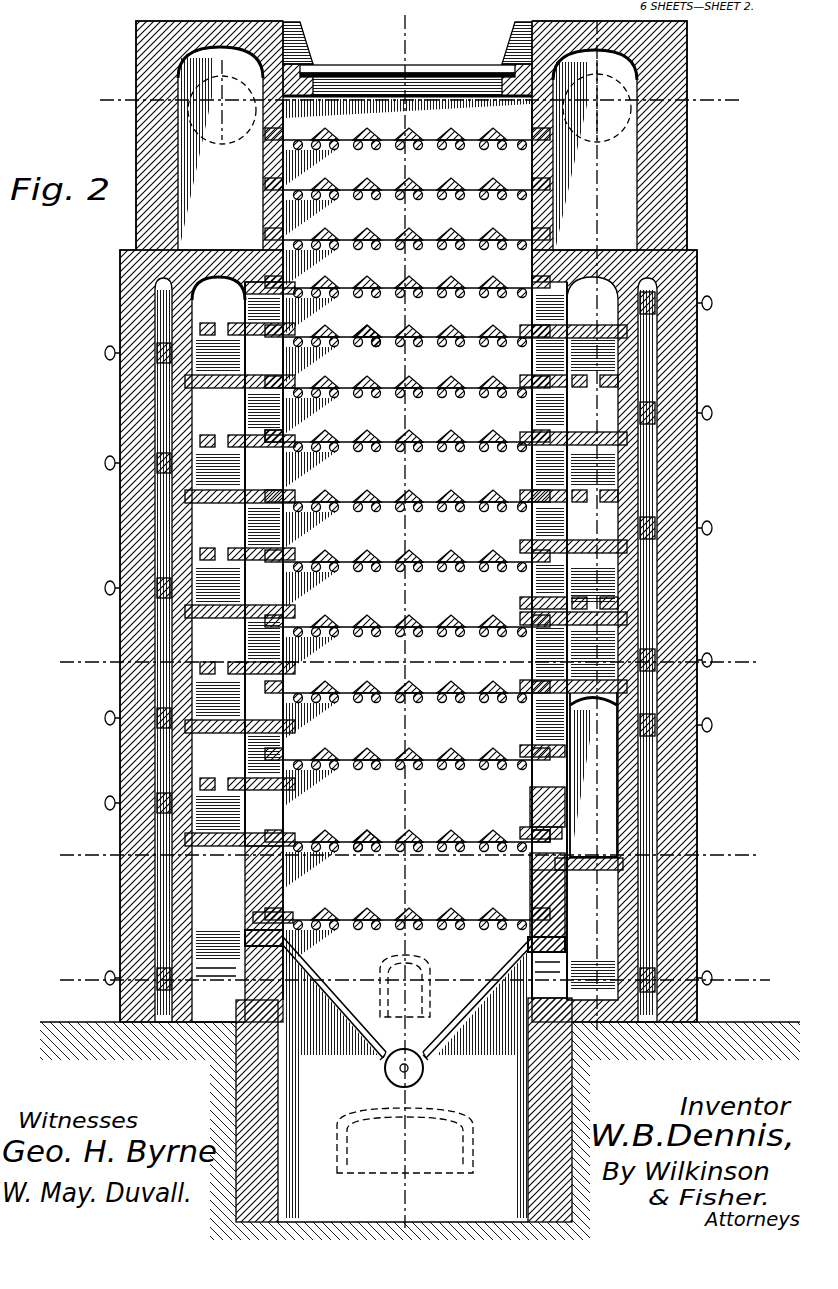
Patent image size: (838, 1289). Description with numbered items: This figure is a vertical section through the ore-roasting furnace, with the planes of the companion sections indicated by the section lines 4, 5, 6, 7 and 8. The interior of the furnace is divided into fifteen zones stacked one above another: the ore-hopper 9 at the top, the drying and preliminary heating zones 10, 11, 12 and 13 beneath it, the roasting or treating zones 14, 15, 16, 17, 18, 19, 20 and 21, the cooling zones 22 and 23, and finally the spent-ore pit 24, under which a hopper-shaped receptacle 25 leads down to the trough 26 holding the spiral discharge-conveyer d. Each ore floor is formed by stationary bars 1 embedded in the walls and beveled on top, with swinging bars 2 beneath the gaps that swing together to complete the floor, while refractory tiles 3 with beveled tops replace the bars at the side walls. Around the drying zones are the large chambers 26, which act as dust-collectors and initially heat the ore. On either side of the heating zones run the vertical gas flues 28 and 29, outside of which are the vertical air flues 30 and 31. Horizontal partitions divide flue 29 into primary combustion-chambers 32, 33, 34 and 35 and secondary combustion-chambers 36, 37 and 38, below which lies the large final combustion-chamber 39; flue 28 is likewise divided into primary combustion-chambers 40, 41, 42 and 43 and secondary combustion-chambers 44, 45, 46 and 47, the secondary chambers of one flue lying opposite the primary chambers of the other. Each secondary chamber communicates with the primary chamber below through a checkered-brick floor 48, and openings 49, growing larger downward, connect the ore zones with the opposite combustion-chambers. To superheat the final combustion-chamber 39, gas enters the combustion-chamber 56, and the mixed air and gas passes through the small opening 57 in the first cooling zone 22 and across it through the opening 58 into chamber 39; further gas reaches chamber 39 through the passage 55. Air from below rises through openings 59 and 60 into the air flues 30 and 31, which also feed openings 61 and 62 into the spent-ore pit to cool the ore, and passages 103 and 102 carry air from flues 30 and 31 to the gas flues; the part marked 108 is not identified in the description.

The stationary bars 1 is at (372, 338).
The swinging bars 2 is at (378, 345).
The refractory tiles 3 is at (292, 438).
The section line 4 4 is at (622, 16).
The section line 5 5 is at (739, 647).
The section line 6 6 is at (739, 840).
The section line 7 7 is at (739, 964).
The section line 8 8 is at (716, 82).
The ore-hopper 9 is at (407, 70).
The drying and preliminary heating zone 10 is at (496, 122).
The drying and preliminary heating zone 11 is at (492, 174).
The drying and preliminary heating zone 12 is at (496, 224).
The drying and preliminary heating zone 13 is at (496, 274).
The roasting or treating zone 14 is at (496, 322).
The roasting or treating zone 15 is at (496, 370).
The roasting or treating zone 16 is at (496, 422).
The roasting or treating zone 17 is at (496, 482).
The roasting or treating zone 18 is at (496, 542).
The roasting or treating zone 19 is at (496, 602).
The roasting or treating zone 20 is at (496, 667).
The final heating zone 21 is at (496, 729).
The cooling zone 22 is at (496, 812).
The cooling zone 23 is at (496, 894).
The spent-ore pit 24 is at (496, 962).
The hopper-shaped receptacle 25 is at (405, 1064).
The trough and large dust-collecting chambers 26 is at (407, 148).
The vertical gas channel or flue 28 is at (249, 907).
The vertical gas channel or flue 29 is at (589, 892).
The vertical air channel or flue 30 is at (205, 878).
The vertical air channel or flue 31 is at (692, 905).
The primary combustion-chamber 32 is at (690, 272).
The primary combustion-chamber 33 is at (610, 410).
The primary combustion-chamber 34 is at (610, 513).
The primary combustion-chamber 35 is at (610, 635).
The secondary combustion-chamber 36 is at (600, 360).
The secondary combustion-chamber 37 is at (608, 475).
The secondary combustion-chamber 38 is at (608, 578).
The final combustion-chamber 39 is at (594, 775).
The primary combustion-chamber 40 is at (190, 372).
The primary combustion-chamber 41 is at (205, 478).
The primary combustion-chamber 42 is at (205, 571).
The primary combustion-chamber 43 is at (205, 752).
The secondary combustion-chamber 44 is at (218, 310).
The secondary combustion-chamber 45 is at (207, 413).
The secondary combustion-chamber 46 is at (205, 533).
The secondary combustion-chamber 47 is at (205, 690).
The floor 48 is at (205, 338).
The openings 49 is at (262, 290).
The passage 55 is at (648, 728).
The combustion-chamber 56 is at (205, 820).
The small opening 57 is at (292, 792).
The opening 58 is at (525, 838).
The opening 59 is at (250, 972).
The opening 60 is at (560, 980).
The opening 61 is at (252, 940).
The opening 62 is at (565, 944).
The passage 102 is at (650, 1005).
The passage 103 is at (158, 1005).
The flue opening 108 is at (655, 336).
The spiral discharge-conveyer d is at (424, 1070).